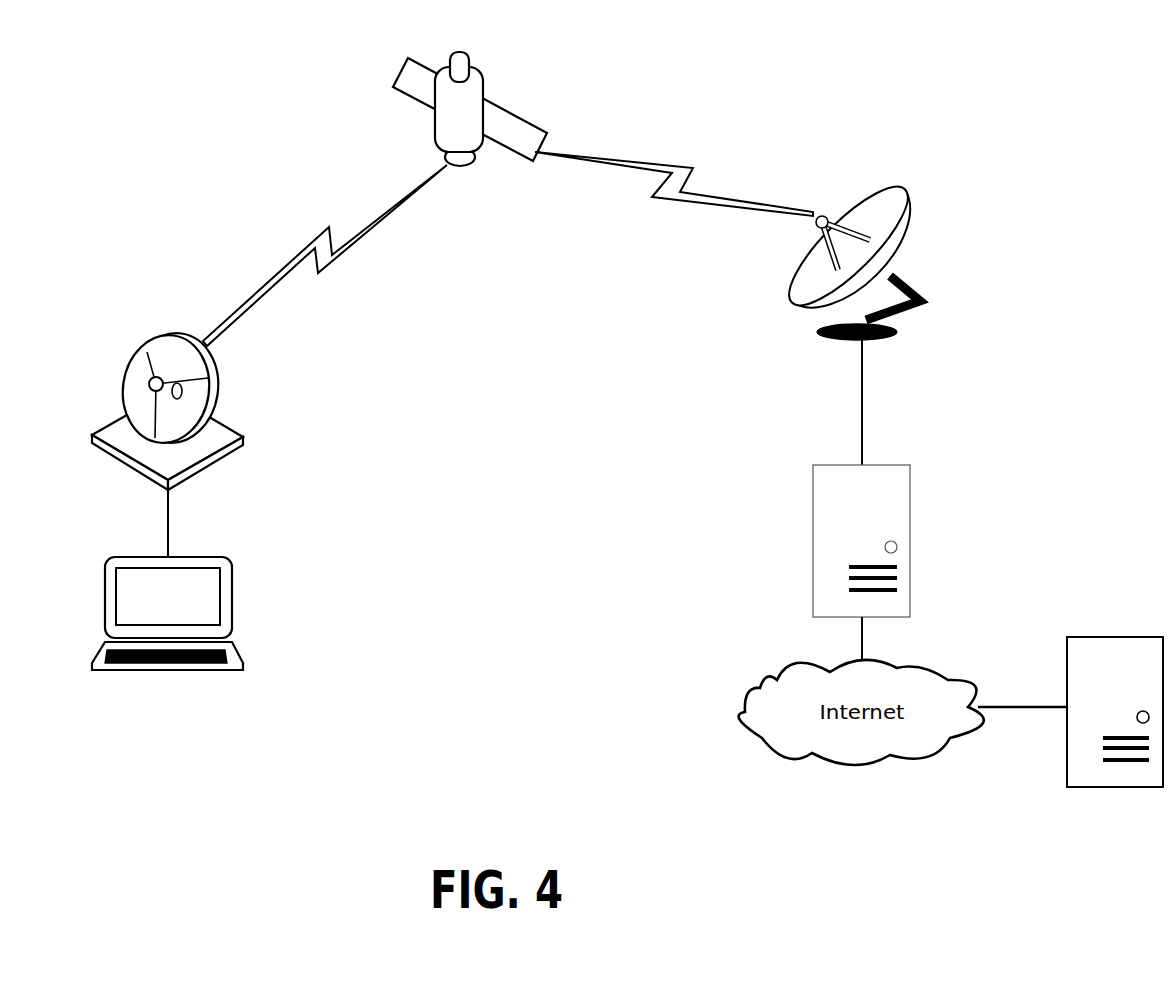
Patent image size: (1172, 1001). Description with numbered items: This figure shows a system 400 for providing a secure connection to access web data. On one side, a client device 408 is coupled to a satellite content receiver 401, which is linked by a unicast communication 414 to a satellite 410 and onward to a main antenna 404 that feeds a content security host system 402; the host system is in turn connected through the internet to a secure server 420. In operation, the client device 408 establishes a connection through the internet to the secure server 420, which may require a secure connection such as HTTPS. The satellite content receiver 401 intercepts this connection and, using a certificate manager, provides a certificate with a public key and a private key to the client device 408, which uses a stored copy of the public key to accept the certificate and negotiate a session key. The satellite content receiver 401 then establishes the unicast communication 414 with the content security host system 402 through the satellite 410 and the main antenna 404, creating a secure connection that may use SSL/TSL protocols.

The system 400 is at (1044, 137).
The satellite content receiver 401 is at (147, 352).
The content security host system 402 is at (810, 550).
The main antenna 404 is at (790, 299).
The client device 408 is at (167, 671).
The satellite 410 is at (546, 135).
The unicast communication 414 is at (329, 227).
The secure server 420 is at (1067, 667).